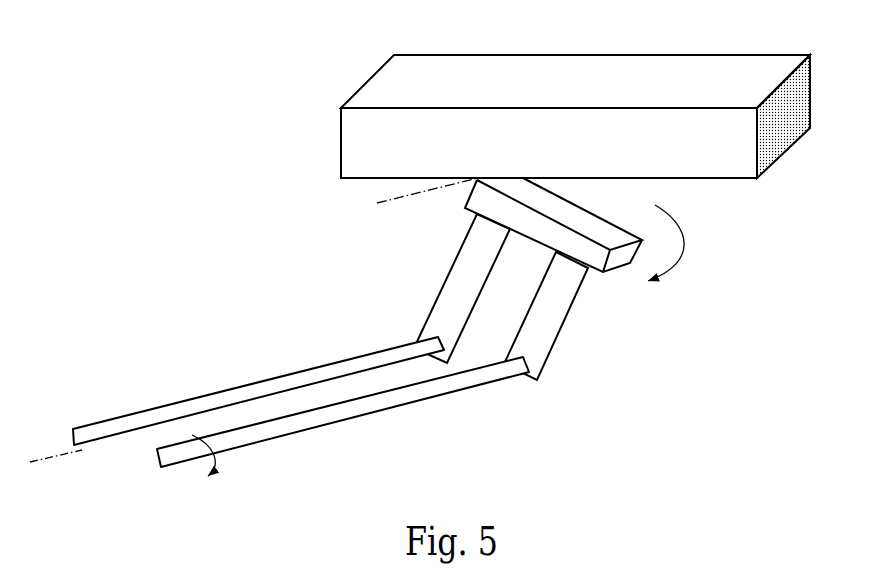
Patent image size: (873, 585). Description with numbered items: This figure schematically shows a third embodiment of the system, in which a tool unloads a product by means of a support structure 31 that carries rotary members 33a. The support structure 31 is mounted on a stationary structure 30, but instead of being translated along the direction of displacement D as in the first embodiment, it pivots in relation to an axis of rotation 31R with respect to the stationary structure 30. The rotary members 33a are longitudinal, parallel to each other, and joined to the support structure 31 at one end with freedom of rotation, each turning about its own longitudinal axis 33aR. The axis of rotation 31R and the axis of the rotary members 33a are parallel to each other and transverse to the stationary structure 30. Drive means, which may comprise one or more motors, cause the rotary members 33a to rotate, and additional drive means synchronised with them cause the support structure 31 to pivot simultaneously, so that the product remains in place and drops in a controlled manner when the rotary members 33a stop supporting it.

The stationary structure 30 is at (382, 133).
The support structure 31 is at (581, 306).
The axis of rotation 31R is at (377, 203).
The rotary members 33a is at (348, 419).
The longitudinal axis 33aR is at (61, 449).
The direction of displacement D is at (430, 278).